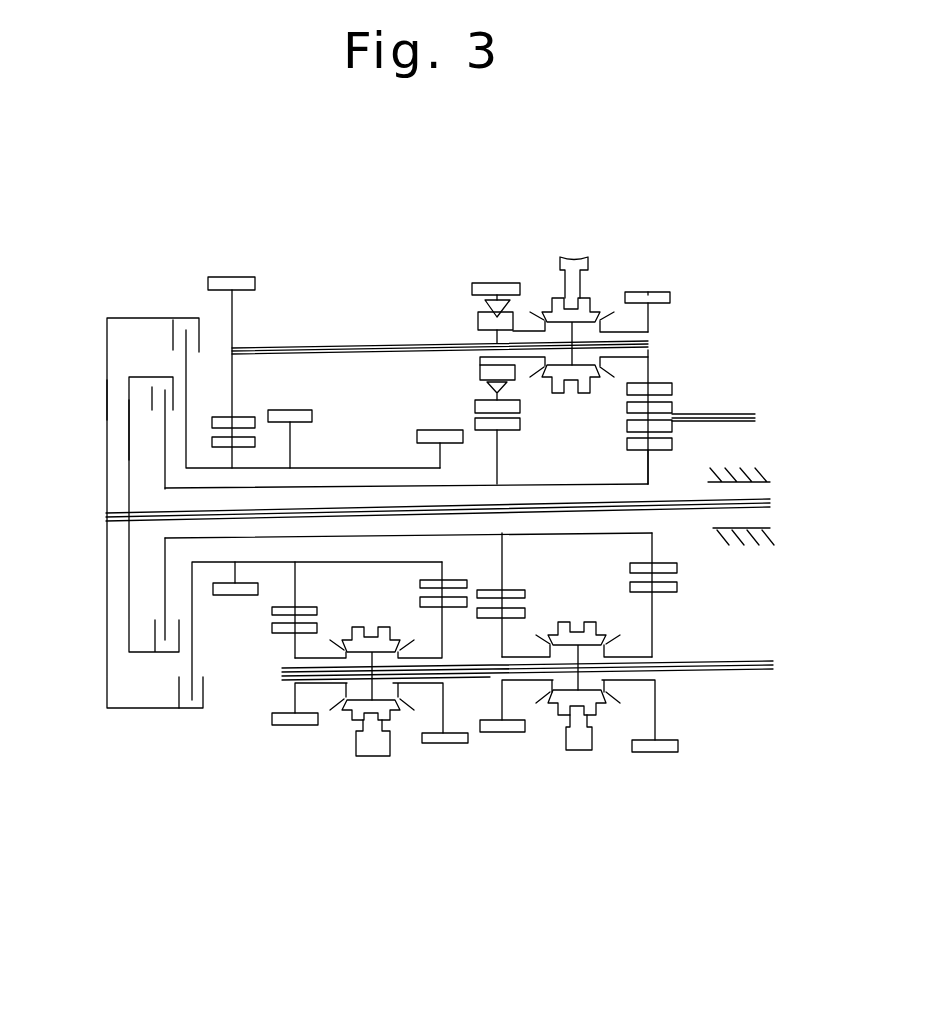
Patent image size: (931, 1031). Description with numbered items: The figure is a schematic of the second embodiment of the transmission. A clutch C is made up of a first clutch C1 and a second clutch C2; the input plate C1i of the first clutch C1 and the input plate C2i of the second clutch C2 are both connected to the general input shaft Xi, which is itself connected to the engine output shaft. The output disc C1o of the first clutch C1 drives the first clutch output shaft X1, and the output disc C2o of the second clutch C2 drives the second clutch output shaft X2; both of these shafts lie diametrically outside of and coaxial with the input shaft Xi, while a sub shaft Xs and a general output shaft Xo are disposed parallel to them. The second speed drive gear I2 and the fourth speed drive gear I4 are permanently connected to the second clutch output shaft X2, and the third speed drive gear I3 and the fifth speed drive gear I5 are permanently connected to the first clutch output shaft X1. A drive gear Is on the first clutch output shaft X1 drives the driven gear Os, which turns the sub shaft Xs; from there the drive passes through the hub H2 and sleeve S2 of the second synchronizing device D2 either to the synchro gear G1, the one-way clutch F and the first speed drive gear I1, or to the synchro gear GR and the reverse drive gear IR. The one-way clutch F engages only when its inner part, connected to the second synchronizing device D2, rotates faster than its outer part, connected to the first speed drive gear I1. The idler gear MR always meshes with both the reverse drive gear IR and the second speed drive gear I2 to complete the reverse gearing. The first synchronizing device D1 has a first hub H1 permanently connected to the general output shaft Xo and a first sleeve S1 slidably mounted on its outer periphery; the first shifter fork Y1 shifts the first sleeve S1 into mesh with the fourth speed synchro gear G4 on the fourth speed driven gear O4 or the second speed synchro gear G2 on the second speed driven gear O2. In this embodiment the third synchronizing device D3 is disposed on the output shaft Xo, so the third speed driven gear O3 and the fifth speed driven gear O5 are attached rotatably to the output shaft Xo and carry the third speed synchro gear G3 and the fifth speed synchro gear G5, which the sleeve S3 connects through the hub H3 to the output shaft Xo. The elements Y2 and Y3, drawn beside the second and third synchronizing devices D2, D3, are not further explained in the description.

The clutch C is at (94, 606).
The first clutch C1 is at (173, 305).
The input plate of the first clutch C1i is at (104, 410).
The output disc of the first clutch C1o is at (188, 427).
The second clutch C2 is at (150, 367).
The input plate of the second clutch C2i is at (128, 397).
The output disc of the second clutch C2o is at (163, 443).
The first clutch output shaft X1 is at (365, 465).
The second clutch output shaft X2 is at (558, 534).
The sub shaft Xs is at (650, 341).
The general input shaft Xi is at (758, 502).
The general output shaft Xo is at (762, 660).
The sub shaft driven gear Os is at (232, 277).
The fifth speed drive gear I5 is at (307, 410).
The third speed drive gear I3 is at (437, 430).
The sub shaft drive gear Is is at (220, 595).
The first speed drive gear I1 is at (485, 283).
The fourth speed drive gear I4 is at (513, 430).
The second speed drive gear I2 is at (662, 450).
The reverse drive gear IR is at (663, 292).
The reverse synchro gear GR is at (613, 307).
The first speed synchro gear G1 is at (537, 307).
The second brake Y2 is at (583, 280).
The one-way clutch F is at (490, 307).
The second synchronizing device D2 is at (692, 302).
The idler gear MR is at (672, 407).
The second sleeve S2 is at (572, 393).
The second hub H2 is at (547, 368).
The third hub H3 is at (340, 640).
The third sleeve S3 is at (370, 637).
The third speed synchro gear G3 is at (403, 713).
The fifth speed synchro gear G5 is at (338, 713).
The third brake Y3 is at (368, 752).
The fifth speed driven gear O5 is at (280, 722).
The third speed driven gear O3 is at (452, 743).
The third synchronizing device D3 is at (318, 811).
The first hub H1 is at (548, 645).
The first sleeve S1 is at (595, 630).
The fourth speed synchro gear G4 is at (540, 706).
The second speed synchro gear G2 is at (617, 706).
The first shifter fork Y1 is at (575, 750).
The fourth speed driven gear O4 is at (503, 732).
The second speed driven gear O2 is at (670, 752).
The first synchronizing device D1 is at (708, 769).